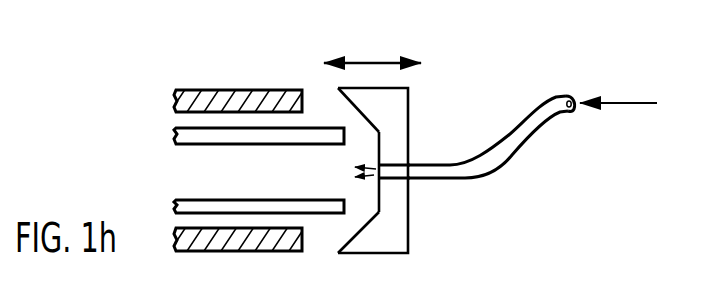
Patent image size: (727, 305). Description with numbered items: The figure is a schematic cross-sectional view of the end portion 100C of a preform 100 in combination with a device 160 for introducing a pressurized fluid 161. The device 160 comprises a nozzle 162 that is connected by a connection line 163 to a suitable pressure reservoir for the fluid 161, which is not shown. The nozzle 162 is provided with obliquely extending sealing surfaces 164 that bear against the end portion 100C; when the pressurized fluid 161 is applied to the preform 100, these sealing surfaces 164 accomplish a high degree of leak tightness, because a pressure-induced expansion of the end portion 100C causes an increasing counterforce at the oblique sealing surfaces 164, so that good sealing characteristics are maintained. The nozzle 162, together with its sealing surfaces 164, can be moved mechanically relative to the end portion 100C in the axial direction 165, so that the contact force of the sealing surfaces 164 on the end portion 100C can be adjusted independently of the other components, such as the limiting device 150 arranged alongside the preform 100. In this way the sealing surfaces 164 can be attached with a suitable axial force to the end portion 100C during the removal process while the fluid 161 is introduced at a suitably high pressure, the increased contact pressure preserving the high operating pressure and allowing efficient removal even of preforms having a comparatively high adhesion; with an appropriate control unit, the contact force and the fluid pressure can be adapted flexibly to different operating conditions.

The limiting device 150 is at (200, 87).
The preform 100 is at (319, 121).
The device for introducing the fluid 160 is at (428, 59).
The sealing surfaces 164 is at (365, 113).
The nozzle 162 is at (397, 165).
The connection line 163 is at (515, 159).
The fluid 161 is at (366, 176).
The axial direction 165 is at (371, 61).
The end portion 100C is at (345, 190).